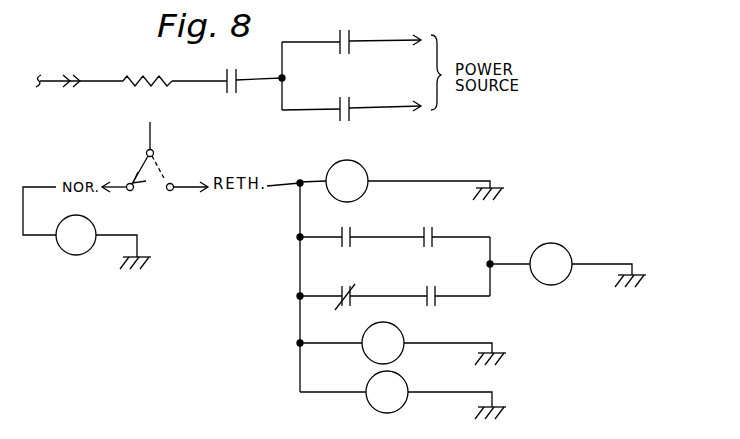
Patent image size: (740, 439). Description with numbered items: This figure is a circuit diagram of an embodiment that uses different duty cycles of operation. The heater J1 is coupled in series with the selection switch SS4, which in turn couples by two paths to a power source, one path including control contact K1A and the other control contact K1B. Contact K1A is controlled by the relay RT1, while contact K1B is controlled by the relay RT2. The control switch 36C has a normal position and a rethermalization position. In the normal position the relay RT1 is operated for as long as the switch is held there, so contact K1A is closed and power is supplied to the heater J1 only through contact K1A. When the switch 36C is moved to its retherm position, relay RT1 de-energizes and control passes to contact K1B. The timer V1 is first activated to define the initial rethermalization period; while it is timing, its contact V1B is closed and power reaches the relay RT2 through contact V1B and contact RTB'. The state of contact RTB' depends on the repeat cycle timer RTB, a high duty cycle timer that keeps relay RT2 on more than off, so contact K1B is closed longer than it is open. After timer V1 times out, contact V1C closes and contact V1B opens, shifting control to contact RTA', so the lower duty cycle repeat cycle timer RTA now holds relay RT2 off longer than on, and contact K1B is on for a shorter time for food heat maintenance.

The control switch 36C is at (171, 162).
The heater J1 is at (147, 68).
The selection switch SS4 is at (231, 71).
The control contact K1A is at (351, 33).
The control contact K1B is at (351, 100).
The relay RT1 is at (87, 228).
The timer V1 is at (402, 181).
The contact V1B is at (330, 228).
The contact RTB' is at (420, 227).
The contact V1C is at (330, 290).
The contact RTA' is at (420, 287).
The relay RT2 is at (568, 265).
The repeat cycle timer RTA is at (403, 343).
The repeat cycle timer RTB is at (403, 395).